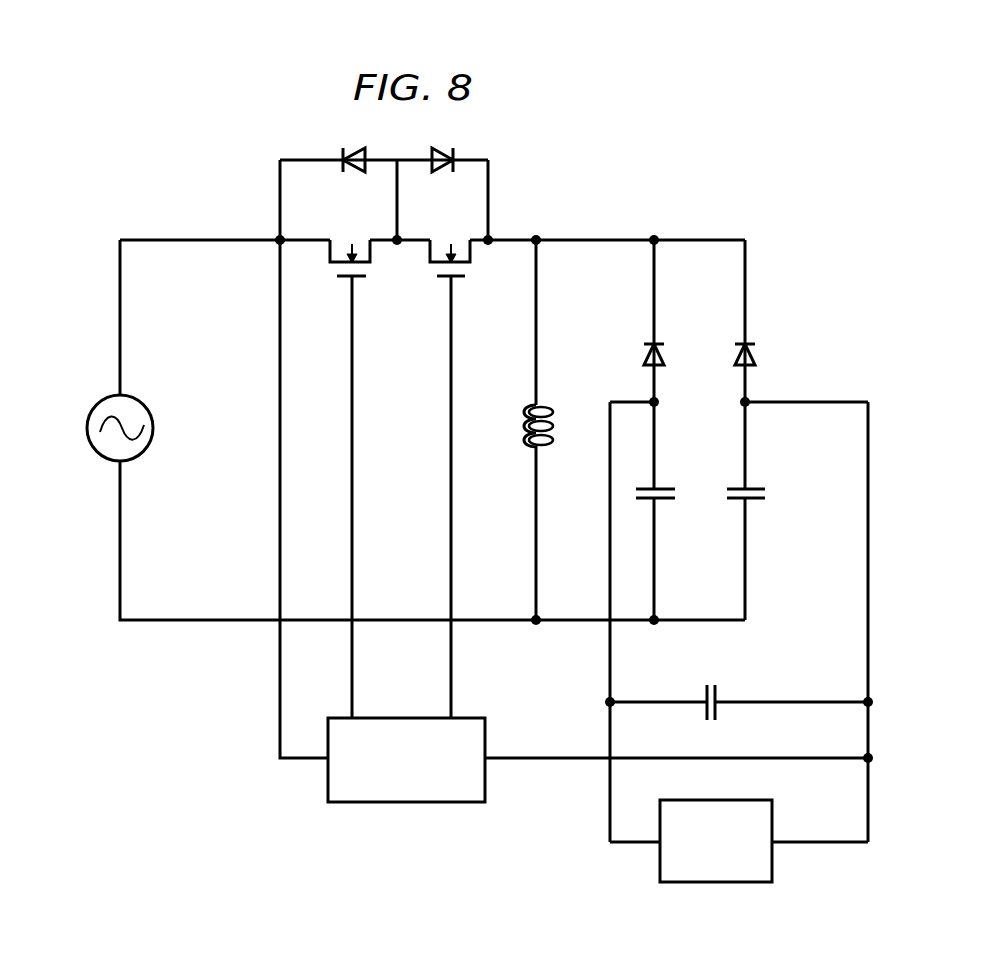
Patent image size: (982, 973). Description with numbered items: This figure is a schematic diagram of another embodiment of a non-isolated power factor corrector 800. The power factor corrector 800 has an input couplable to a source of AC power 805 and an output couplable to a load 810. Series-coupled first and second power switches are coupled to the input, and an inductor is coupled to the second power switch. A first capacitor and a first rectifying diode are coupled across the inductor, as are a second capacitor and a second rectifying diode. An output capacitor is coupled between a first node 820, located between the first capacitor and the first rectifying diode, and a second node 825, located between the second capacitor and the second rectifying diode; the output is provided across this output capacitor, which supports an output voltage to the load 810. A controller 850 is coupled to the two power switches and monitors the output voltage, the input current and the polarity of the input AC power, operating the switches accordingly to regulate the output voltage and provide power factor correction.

The non-isolated power factor corrector 800 is at (196, 168).
The source of AC power 805 is at (94, 411).
The load 810 is at (742, 883).
The first node 820 is at (657, 399).
The second node 825 is at (749, 399).
The controller 850 is at (448, 803).